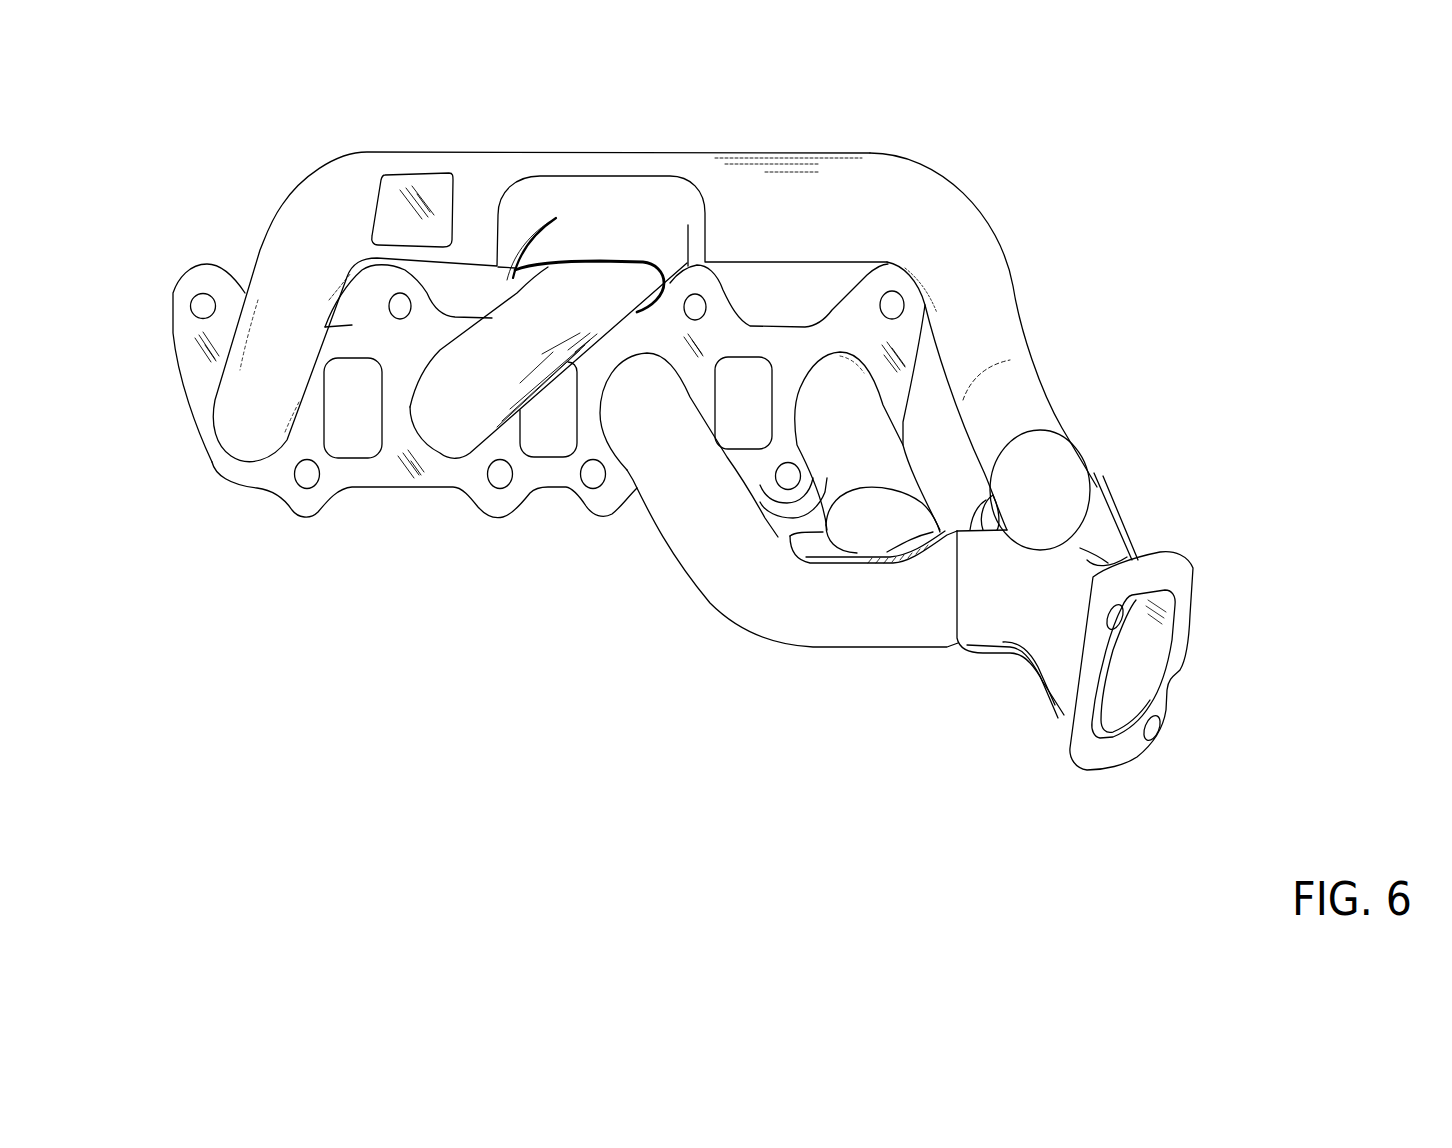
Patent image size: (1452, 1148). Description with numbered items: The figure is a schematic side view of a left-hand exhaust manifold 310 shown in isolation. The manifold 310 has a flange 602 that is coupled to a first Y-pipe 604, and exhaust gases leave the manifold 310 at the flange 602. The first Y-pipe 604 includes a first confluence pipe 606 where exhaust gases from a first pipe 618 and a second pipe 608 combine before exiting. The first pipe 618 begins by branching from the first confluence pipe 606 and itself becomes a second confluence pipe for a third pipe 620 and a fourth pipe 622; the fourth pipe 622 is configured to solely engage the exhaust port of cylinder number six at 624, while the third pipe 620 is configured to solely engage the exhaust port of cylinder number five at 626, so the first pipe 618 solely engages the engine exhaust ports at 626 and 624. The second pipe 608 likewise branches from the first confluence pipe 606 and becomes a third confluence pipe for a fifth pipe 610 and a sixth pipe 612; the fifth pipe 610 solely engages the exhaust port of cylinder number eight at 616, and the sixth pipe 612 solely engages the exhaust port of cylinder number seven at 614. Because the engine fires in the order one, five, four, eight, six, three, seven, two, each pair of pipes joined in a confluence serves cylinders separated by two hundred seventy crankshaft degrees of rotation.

The left-hand exhaust manifold 310 is at (1043, 700).
The flange 602 is at (1118, 757).
The first Y-pipe 604 is at (1022, 673).
The first confluence pipe 606 is at (1113, 563).
The second pipe 608 is at (943, 643).
The fifth pipe 610 is at (883, 408).
The sixth pipe 612 is at (670, 550).
The exhaust port of cylinder number seven 614 is at (617, 368).
The exhaust port of cylinder number eight 616 is at (823, 365).
The first pipe 618 is at (1024, 333).
The third pipe 620 is at (453, 150).
The fourth pipe 622 is at (482, 312).
The exhaust port of cylinder number six 624 is at (446, 458).
The exhaust port of cylinder number five 626 is at (222, 475).